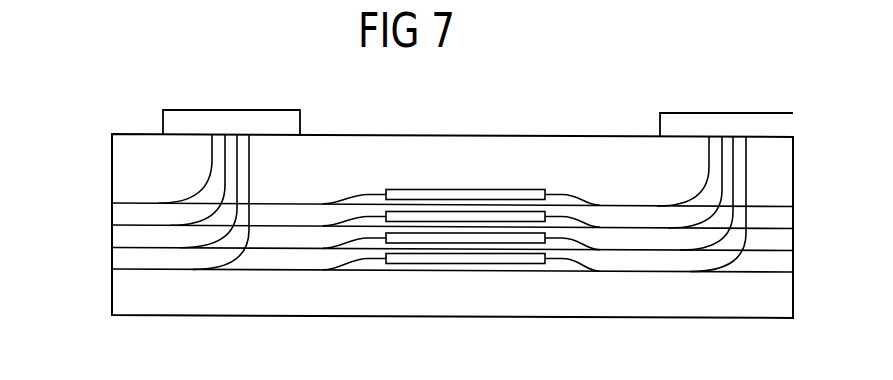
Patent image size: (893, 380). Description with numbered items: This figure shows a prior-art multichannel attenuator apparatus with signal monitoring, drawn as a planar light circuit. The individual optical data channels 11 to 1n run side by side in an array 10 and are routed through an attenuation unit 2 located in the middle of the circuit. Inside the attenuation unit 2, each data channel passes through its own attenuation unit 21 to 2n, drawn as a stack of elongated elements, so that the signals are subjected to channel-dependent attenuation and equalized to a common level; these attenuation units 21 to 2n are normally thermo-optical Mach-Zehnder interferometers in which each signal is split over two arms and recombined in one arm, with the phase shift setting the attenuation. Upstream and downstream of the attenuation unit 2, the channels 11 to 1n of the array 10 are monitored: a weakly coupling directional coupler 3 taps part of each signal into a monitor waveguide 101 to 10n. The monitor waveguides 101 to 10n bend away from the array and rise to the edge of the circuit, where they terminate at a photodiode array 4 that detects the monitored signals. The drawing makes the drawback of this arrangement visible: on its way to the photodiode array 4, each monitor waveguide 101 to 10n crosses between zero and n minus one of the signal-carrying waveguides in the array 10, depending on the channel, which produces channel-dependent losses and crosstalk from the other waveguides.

The attenuation unit 2 is at (461, 200).
The attenuation unit 21 is at (500, 192).
The attenuation unit 2n is at (453, 258).
The weakly coupling directional coupler 3 is at (190, 193).
The photodiode array 4 is at (232, 122).
The array 10 is at (178, 281).
The monitor waveguide 101 is at (200, 188).
The monitor waveguide 10n is at (233, 250).
The optical data channel 11 is at (130, 204).
The optical data channel 1n is at (130, 270).